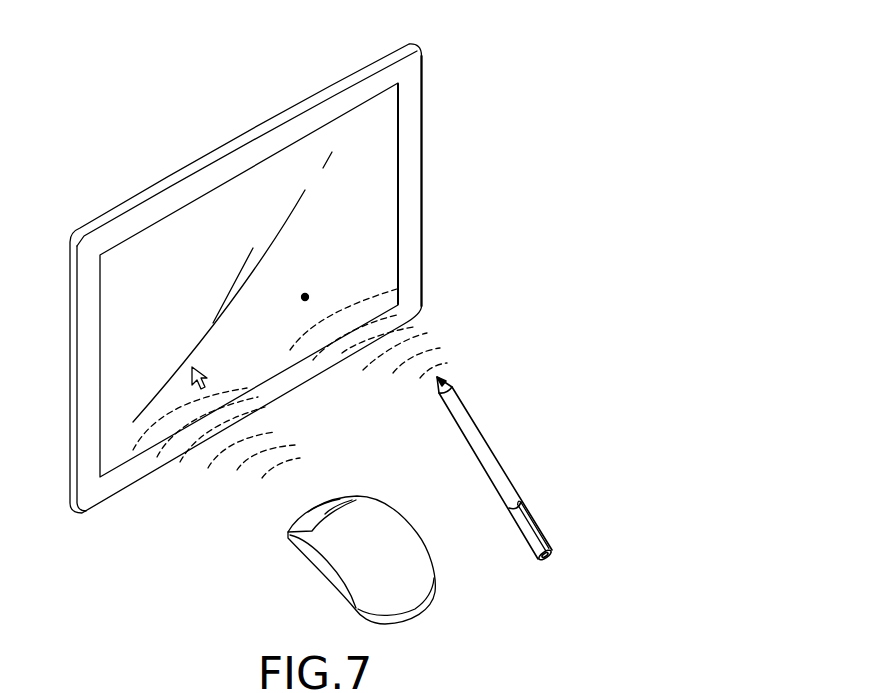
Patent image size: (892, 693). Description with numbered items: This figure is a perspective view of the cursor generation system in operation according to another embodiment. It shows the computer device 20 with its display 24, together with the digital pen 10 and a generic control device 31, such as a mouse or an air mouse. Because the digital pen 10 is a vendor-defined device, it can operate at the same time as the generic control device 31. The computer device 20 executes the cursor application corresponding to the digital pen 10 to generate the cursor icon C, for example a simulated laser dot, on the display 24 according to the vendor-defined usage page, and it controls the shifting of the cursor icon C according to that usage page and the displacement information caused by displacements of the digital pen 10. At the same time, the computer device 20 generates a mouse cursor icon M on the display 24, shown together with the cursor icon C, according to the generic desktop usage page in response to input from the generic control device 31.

The computer device 20 is at (422, 180).
The display 24 is at (361, 123).
The cursor icon C is at (308, 296).
The mouse cursor icon M is at (202, 372).
The digital pen 10 is at (495, 453).
The generic control device 31 is at (412, 553).